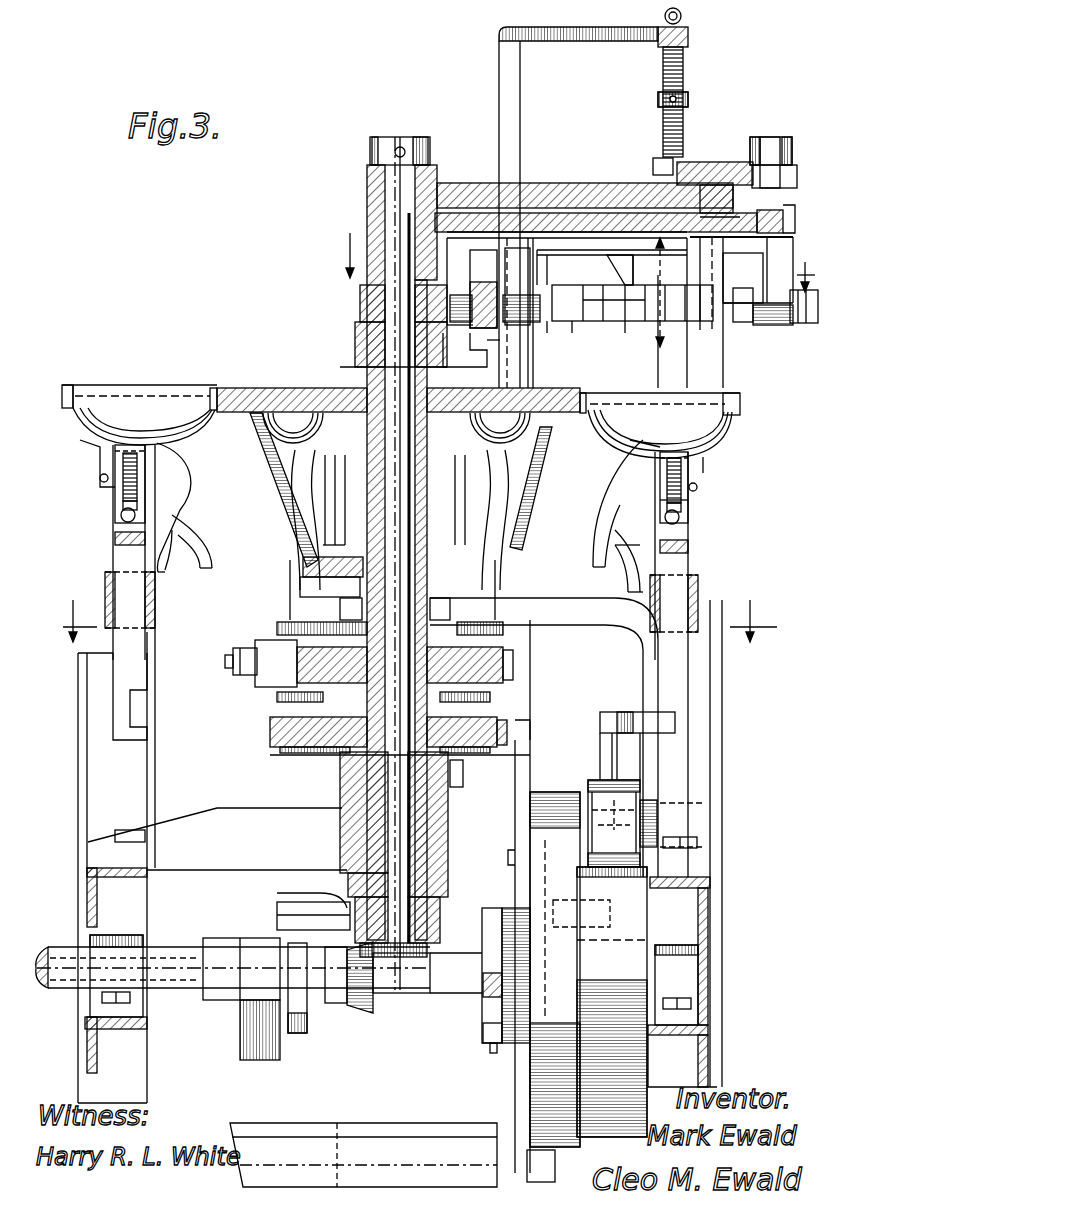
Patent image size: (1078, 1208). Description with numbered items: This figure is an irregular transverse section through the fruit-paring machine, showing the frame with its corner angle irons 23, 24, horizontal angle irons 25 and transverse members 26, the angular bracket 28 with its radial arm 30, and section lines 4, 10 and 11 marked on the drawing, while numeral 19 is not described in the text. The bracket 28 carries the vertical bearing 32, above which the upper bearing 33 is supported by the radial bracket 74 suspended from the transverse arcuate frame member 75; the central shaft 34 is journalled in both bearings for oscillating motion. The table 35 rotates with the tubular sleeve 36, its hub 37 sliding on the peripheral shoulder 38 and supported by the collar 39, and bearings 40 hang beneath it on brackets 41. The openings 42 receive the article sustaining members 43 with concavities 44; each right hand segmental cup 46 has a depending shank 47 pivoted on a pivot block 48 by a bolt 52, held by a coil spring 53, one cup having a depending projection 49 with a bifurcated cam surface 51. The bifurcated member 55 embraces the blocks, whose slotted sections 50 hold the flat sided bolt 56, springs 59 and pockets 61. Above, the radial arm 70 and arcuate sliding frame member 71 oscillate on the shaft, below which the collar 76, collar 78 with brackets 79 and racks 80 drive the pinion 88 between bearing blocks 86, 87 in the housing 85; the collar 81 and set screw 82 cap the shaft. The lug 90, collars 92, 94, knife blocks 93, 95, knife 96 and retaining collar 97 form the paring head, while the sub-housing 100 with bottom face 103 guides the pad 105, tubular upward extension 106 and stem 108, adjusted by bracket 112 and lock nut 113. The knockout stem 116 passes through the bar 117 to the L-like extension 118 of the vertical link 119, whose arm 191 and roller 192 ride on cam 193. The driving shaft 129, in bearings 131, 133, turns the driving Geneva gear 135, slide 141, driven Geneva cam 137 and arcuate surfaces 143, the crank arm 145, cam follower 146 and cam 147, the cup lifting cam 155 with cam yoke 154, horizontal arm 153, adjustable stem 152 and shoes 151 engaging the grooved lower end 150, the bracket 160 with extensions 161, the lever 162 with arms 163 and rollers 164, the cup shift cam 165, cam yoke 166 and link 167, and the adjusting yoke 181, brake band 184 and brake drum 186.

The section line 4- 4 is at (410, 622).
The section line 10- 10 is at (814, 273).
The section line 11- 11 is at (499, 292).
The lever arm 19 is at (293, 578).
The angle iron corner member 23 is at (723, 702).
The angle iron corner member 24 is at (83, 744).
The horizontal angle iron 25 is at (87, 1049).
The transverse member 26 is at (87, 899).
The angular bracket 28 is at (217, 839).
The radial arm 30 is at (487, 992).
The vertical bearing 32 is at (442, 878).
The upper bearing 33 is at (366, 213).
The shaft 34 is at (397, 293).
The table 35 is at (250, 387).
The tubular sleeve 36 is at (364, 373).
The hub 37 is at (360, 487).
The peripheral shoulder 38 is at (355, 751).
The collar 39 is at (300, 574).
The bearing 40 is at (105, 590).
The bracket 41 is at (263, 483).
The opening 42 is at (212, 388).
The article sustaining member 43 is at (155, 388).
The concavity 44 is at (68, 385).
The right hand segmental cup 46 is at (97, 455).
The depending shank 47 is at (91, 479).
The pivot block 48 is at (127, 511).
The depending projection 49 is at (193, 517).
The slotted section 50 is at (140, 481).
The bifurcated cam surface 51 is at (537, 525).
The screw or bolt 52 is at (98, 474).
The coil spring 53 is at (118, 481).
The bifurcated member 55 is at (117, 541).
The flat sided bolt 56 is at (125, 519).
The spring 59 is at (637, 548).
The pocket 61 is at (683, 521).
The radial arm 70 is at (557, 195).
The arcuate sliding frame member 71 is at (755, 165).
The radial bracket 74 is at (717, 216).
The transverse arcuate frame member 75 is at (776, 222).
The collar 76 is at (360, 286).
The collar 78 is at (438, 351).
The bracket 79 is at (486, 356).
The rack 80 is at (467, 328).
The collar 81 is at (370, 147).
The set screw 82 is at (403, 148).
The housing 85 is at (470, 232).
The bearing block 86 is at (450, 257).
The bearing block 87 is at (516, 288).
The pinion 88 is at (473, 288).
The lug 90 is at (785, 254).
The collar 92 is at (548, 303).
The knife block 93 is at (585, 300).
The collar 94 is at (760, 298).
The knife block 95 is at (737, 290).
The knife 96 is at (637, 303).
The retaining collar 97 is at (803, 323).
The sub-housing 100 is at (588, 307).
The bottom face 103 is at (683, 342).
The pad 105 is at (620, 324).
The tubular upward extension 106 is at (657, 278).
The stem or leg 108 is at (620, 278).
The bracket 112 is at (612, 212).
The lock nut 113 is at (706, 160).
The stem 116 is at (680, 130).
The bar 117 is at (688, 37).
The L-like extension 118 is at (609, 40).
The vertical link or arm 119 is at (500, 83).
The driving shaft 129 is at (193, 985).
The bearing 131 is at (455, 1015).
The split bearing 133 is at (98, 988).
The driving Geneva gear 135 is at (538, 1166).
The driven Geneva cam 137 is at (507, 728).
The slide 141 is at (455, 771).
The arcuate surface 143 is at (293, 729).
The crank arm 145 is at (277, 893).
The cam follower 146 is at (293, 914).
The cam 147 is at (307, 1023).
The grooved lower end 150 is at (143, 706).
The shoe 151 is at (584, 753).
The adjustable stem 152 is at (614, 753).
The horizontal arm 153 is at (603, 784).
The cam yoke 154 is at (633, 921).
The cup lifting cam 155 is at (710, 883).
The bracket 160 is at (540, 676).
The extension 161 is at (277, 698).
The lever 162 is at (582, 620).
The arm 163 is at (405, 611).
The roller 164 is at (277, 628).
The cup shift cam 165 is at (507, 948).
The cam yoke 166 is at (492, 1043).
The link 167 is at (485, 1030).
The adjusting yoke 181 is at (233, 662).
The brake band 184 is at (257, 646).
The brake drum 186 is at (507, 648).
The arm 191 is at (368, 1155).
The roller 192 is at (363, 1155).
The cam 193 is at (540, 787).